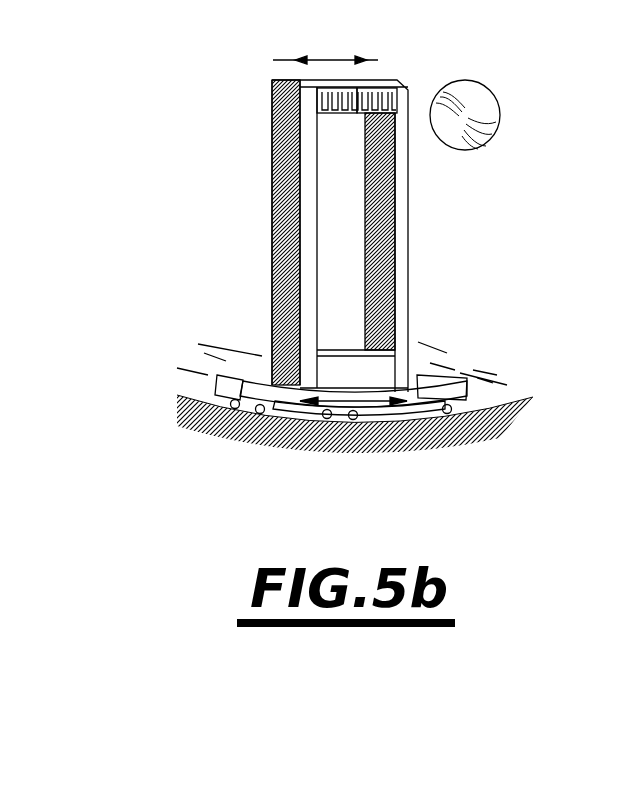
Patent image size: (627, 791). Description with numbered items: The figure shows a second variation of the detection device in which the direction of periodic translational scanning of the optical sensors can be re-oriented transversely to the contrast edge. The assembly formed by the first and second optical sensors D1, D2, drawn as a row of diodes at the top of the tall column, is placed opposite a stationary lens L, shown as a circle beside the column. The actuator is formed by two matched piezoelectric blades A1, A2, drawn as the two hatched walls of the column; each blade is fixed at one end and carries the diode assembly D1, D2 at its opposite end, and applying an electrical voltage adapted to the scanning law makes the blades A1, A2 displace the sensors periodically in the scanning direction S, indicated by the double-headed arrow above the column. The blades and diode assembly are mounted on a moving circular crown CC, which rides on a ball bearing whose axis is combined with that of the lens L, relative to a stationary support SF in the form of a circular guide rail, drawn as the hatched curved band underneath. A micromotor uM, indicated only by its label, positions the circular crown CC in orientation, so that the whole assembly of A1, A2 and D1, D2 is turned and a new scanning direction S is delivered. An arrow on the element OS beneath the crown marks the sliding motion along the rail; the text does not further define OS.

The scanning direction S is at (325, 60).
The first optical sensor D1 is at (398, 100).
The second optical sensor D2 is at (424, 59).
The lens L is at (468, 150).
The first piezoelectric blade A1 is at (271, 218).
The second piezoelectric blade A2 is at (400, 259).
The circular crown CC is at (484, 398).
The oscillating slide OS is at (383, 408).
The micromotor uM is at (520, 413).
The stationary support SF is at (237, 425).